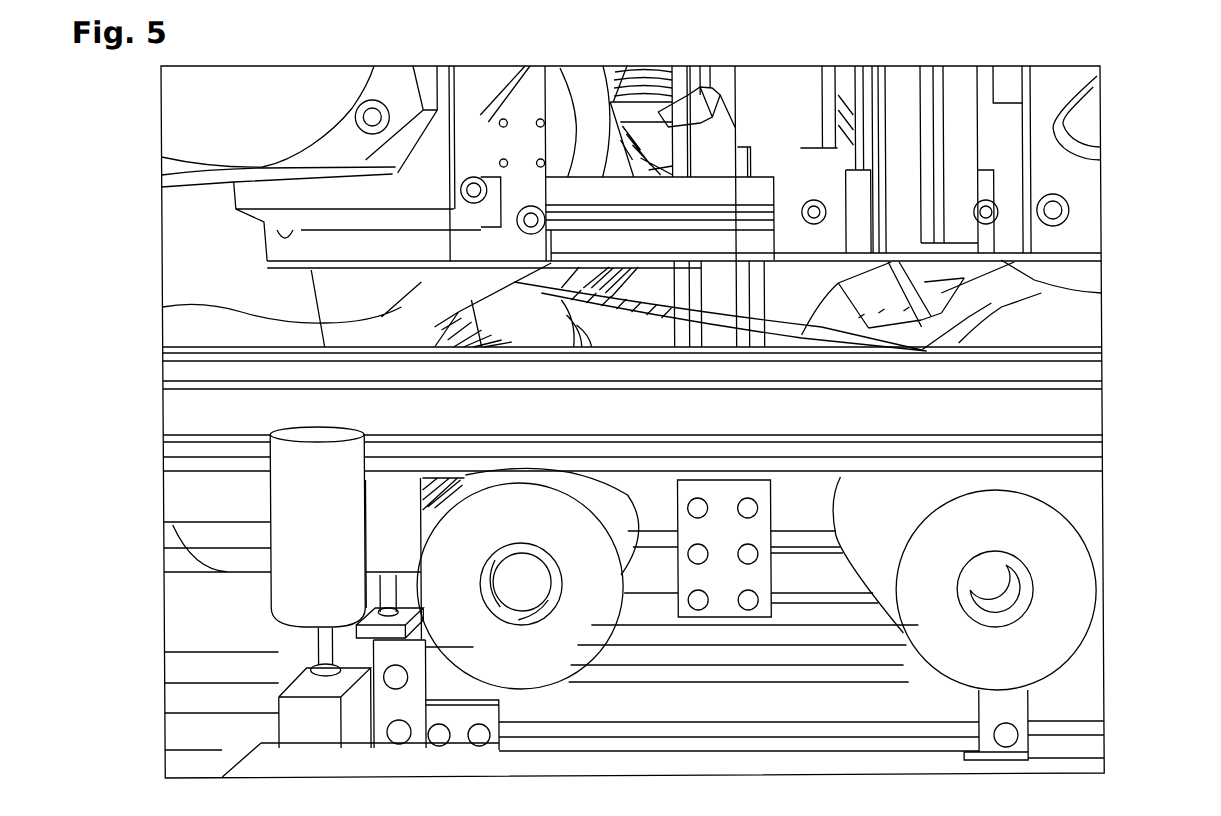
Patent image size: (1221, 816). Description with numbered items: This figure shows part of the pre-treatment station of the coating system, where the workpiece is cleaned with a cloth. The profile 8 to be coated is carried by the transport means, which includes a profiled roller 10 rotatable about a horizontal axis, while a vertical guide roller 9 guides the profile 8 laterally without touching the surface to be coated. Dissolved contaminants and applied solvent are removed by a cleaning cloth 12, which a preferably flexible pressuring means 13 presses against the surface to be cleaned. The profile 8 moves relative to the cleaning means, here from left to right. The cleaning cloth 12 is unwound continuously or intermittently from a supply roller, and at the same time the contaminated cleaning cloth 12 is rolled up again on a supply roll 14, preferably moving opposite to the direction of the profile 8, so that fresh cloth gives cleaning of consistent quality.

The profile 8 is at (1062, 408).
The vertical guide roller 9 is at (305, 547).
The profiled roller 10 is at (1062, 592).
The cleaning cloth 12 is at (940, 283).
The pressuring means 13 is at (967, 317).
The supply roll 14 is at (163, 310).